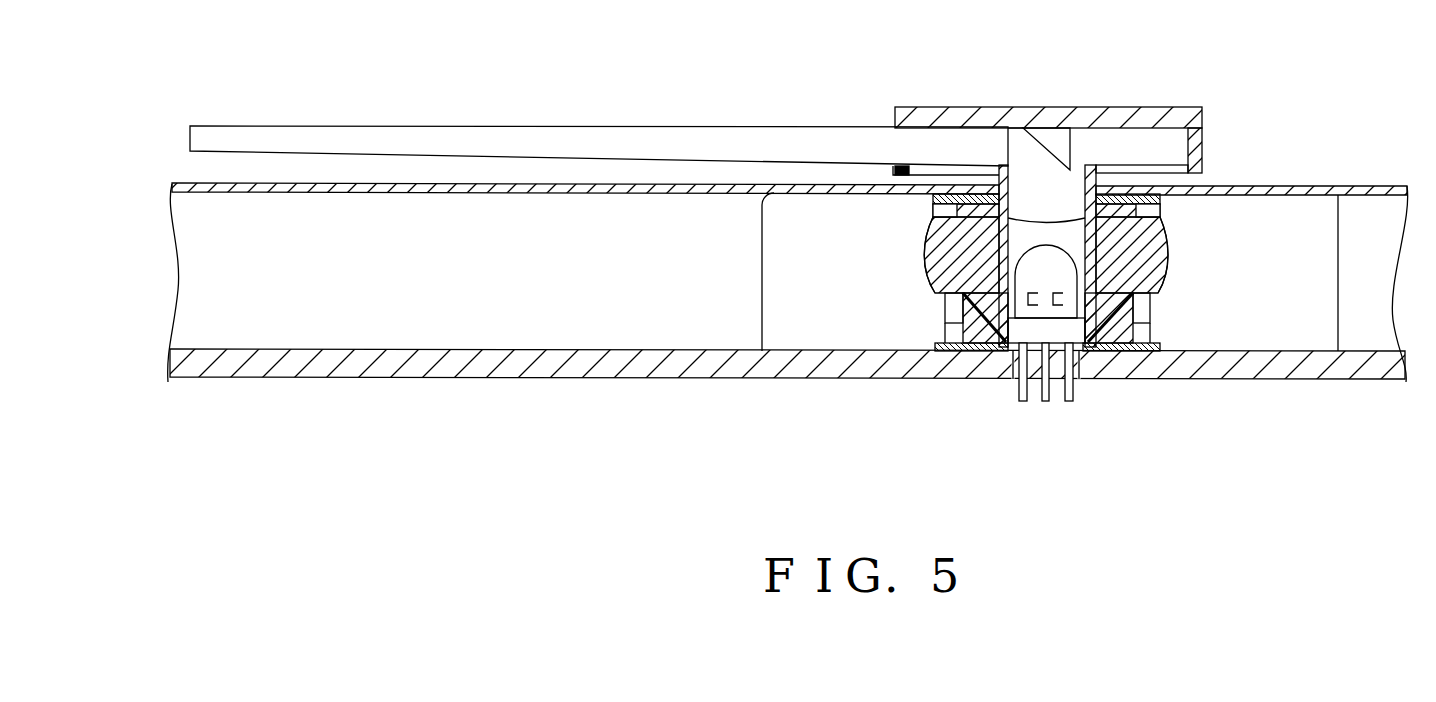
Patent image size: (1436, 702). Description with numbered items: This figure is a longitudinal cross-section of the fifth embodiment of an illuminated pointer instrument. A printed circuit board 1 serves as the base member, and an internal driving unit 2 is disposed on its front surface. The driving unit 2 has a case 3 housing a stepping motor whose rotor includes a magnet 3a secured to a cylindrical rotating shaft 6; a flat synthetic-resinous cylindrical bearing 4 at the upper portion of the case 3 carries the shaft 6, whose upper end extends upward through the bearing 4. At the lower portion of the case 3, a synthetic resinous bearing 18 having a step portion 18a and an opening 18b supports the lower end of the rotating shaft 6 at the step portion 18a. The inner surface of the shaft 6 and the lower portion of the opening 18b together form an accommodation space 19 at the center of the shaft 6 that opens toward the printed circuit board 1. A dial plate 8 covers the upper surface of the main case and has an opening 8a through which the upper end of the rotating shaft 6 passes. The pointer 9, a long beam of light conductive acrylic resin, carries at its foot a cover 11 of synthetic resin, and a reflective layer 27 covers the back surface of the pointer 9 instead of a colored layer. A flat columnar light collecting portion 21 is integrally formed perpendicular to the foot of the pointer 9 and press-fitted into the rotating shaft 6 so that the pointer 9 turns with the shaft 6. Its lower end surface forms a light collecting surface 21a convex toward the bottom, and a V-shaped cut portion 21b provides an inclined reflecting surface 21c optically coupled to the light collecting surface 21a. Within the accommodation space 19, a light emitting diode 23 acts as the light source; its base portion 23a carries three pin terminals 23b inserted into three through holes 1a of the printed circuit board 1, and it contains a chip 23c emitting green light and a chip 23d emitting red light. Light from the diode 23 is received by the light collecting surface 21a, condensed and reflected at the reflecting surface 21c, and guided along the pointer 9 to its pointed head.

The printed circuit board 1 is at (596, 380).
The through holes 1a is at (1070, 363).
The internal driving unit 2 is at (1343, 226).
The case 3 is at (937, 356).
The magnet 3a is at (935, 222).
The bearing 4 is at (1160, 206).
The rotating shaft 6 is at (935, 280).
The dial plate 8 is at (1309, 186).
The opening 8a is at (1098, 176).
The pointer 9 is at (658, 126).
The cover 11 is at (1184, 108).
The bearing 18 is at (961, 352).
The step portion 18a is at (1157, 288).
The opening 18b is at (995, 352).
The accommodation space 19 is at (935, 250).
The light collecting portion 21 is at (935, 236).
The light collecting surface 21a is at (1157, 226).
The V-shaped cut portion 21b is at (1060, 140).
The reflecting surface 21c is at (1043, 127).
The light emitting diode 23 is at (960, 312).
The base portion 23a is at (1095, 350).
The pin terminals 23b is at (1070, 403).
The chip 23c is at (1036, 293).
The chip 23d is at (1060, 293).
The reflective layer 27 is at (552, 164).